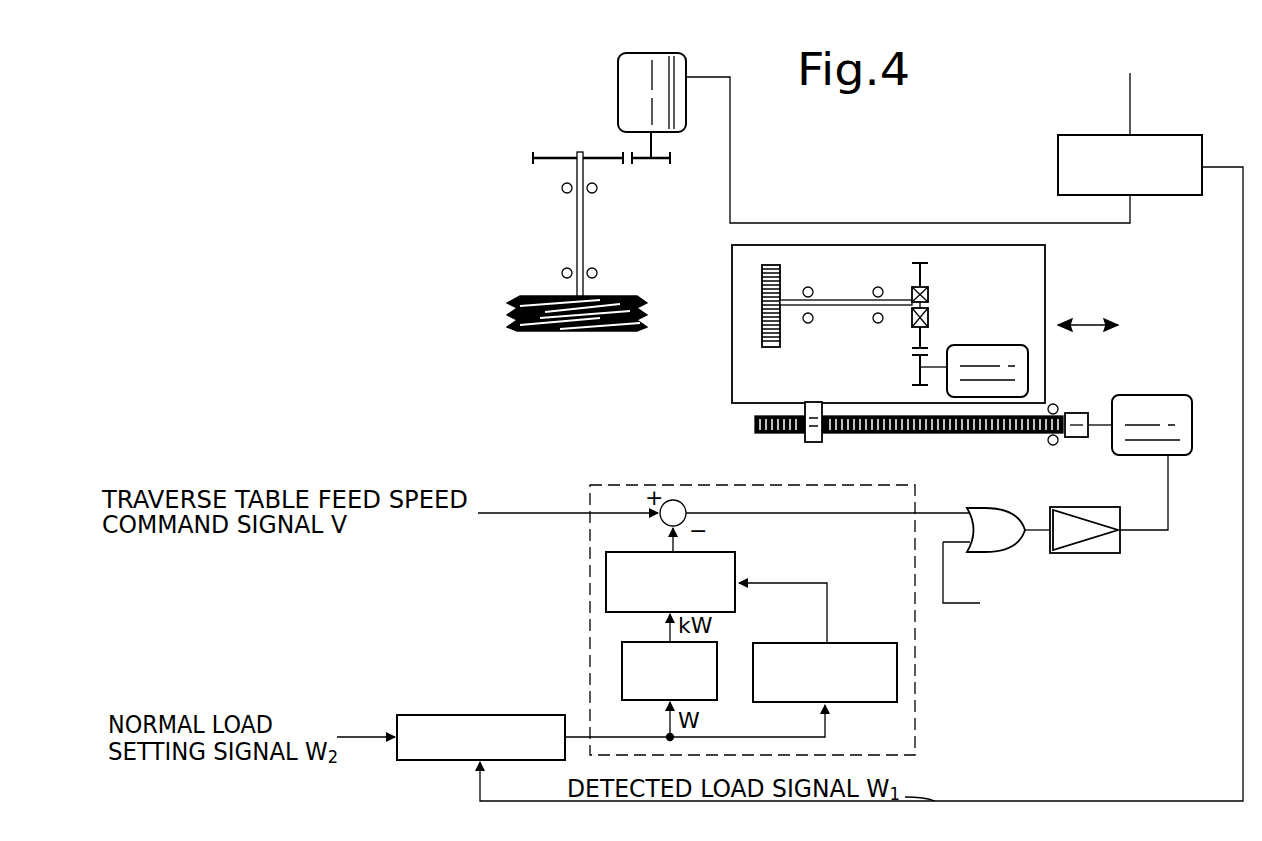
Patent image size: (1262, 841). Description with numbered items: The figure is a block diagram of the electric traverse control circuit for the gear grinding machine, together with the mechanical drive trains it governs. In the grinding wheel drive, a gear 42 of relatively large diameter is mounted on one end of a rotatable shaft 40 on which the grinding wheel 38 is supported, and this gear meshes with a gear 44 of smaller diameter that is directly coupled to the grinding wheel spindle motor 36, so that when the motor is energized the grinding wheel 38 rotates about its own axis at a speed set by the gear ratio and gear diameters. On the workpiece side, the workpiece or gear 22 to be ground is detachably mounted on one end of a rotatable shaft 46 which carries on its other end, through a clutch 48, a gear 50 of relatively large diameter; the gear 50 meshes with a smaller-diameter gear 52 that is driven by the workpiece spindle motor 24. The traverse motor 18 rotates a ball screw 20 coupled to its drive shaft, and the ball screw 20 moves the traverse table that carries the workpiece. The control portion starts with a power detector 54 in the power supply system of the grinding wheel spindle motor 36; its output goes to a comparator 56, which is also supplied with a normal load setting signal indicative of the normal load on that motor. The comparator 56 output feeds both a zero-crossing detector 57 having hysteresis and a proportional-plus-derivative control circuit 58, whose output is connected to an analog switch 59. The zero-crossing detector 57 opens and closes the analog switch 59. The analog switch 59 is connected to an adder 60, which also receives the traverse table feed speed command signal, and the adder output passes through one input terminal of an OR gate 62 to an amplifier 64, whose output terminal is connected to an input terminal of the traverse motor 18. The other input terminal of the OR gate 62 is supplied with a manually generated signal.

The traverse motor 18 is at (1148, 405).
The ball screw 20 is at (955, 435).
The workpiece or gear 22 is at (762, 295).
The workpiece spindle motor 24 is at (1010, 378).
The grinding wheel spindle motor 36 is at (640, 68).
The grinding wheel 38 is at (535, 296).
The rotatable shaft 40 is at (575, 222).
The gear 42 is at (558, 156).
The gear 44 is at (638, 160).
The rotatable shaft 46 is at (850, 300).
The clutch 48 is at (930, 297).
The gear 50 is at (928, 272).
The gear 52 is at (912, 358).
The power detector 54 is at (1090, 133).
The comparator 56 is at (487, 715).
The zero-crossing detector 57 is at (876, 643).
The proportional-plus-derivative control circuit 58 is at (622, 660).
The analog switch 59 is at (738, 563).
The adder 60 is at (678, 500).
The OR gate 62 is at (995, 540).
The amplifier 64 is at (1095, 548).